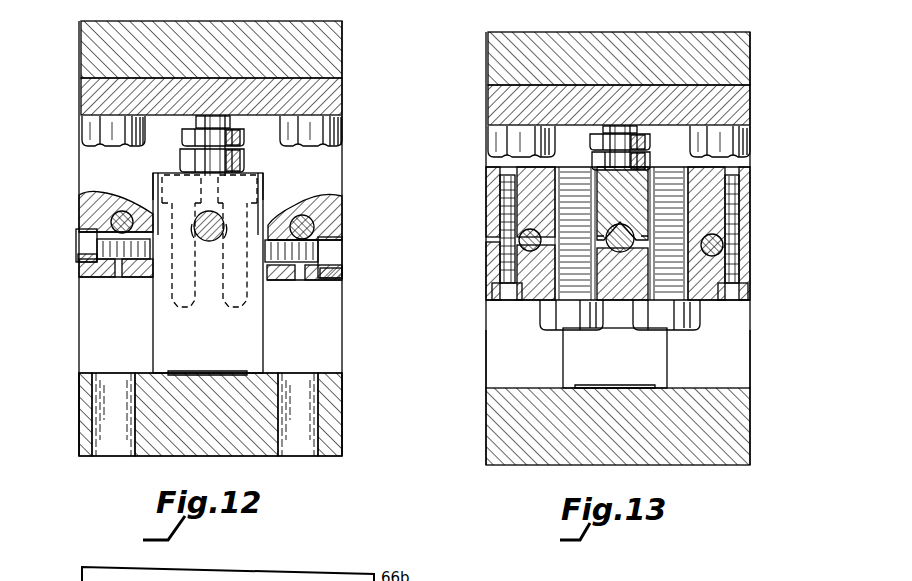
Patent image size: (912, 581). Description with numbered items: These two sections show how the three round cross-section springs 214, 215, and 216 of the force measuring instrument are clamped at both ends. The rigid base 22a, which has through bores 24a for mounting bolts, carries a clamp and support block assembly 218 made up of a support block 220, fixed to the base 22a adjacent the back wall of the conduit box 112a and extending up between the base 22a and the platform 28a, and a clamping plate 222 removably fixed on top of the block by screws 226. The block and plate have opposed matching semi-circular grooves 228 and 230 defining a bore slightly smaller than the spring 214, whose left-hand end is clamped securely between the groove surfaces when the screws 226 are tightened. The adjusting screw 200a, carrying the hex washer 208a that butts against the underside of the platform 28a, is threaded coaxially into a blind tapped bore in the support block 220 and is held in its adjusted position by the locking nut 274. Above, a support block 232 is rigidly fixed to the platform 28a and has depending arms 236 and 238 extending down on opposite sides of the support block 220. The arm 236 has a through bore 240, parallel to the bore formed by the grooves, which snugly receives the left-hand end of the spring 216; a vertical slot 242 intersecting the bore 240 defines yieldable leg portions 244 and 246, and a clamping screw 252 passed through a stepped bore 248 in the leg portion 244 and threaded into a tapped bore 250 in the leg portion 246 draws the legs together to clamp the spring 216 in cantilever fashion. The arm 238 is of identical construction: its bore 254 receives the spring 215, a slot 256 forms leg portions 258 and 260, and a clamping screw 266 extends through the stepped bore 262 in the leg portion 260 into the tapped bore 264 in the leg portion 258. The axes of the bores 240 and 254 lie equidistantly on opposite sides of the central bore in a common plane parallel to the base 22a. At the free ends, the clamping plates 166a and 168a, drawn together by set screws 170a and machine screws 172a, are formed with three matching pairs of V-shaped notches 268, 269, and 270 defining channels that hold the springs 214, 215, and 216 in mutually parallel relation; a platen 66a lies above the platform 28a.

In FIG. 12, the platen 66a is at (344, 52).
In FIG. 13, the platen 66a is at (606, 32).
In FIG. 12, the platform 28a is at (344, 102).
In FIG. 13, the platform 28a is at (490, 100).
In FIG. 12, the hex washer 208a is at (205, 128).
In FIG. 13, the hex washer 208a is at (615, 135).
In FIG. 12, the adjusting screw 200a is at (226, 128).
In FIG. 13, the adjusting screw 200a is at (630, 126).
In FIG. 12, the clamping plate 222 is at (230, 150).
In FIG. 12, the locking nut 274 is at (186, 160).
In FIG. 13, the locking nut 274 is at (642, 152).
In FIG. 12, the support block 232 is at (330, 166).
In FIG. 12, the clamp and support block assembly 218 is at (150, 341).
In FIG. 12, the support block 220 is at (263, 357).
In FIG. 13, the support block 220 is at (663, 377).
In FIG. 12, the semi-circular groove 228 is at (214, 242).
In FIG. 12, the semi-circular groove 230 is at (198, 216).
In FIG. 12, the spring 214 is at (222, 217).
In FIG. 13, the spring 214 is at (571, 288).
In FIG. 12, the screws 226 is at (153, 173).
In FIG. 12, the depending arm 236 is at (80, 204).
In FIG. 12, the through bore 240 is at (84, 216).
In FIG. 12, the spring 216 is at (125, 211).
In FIG. 13, the spring 216 is at (520, 245).
In FIG. 12, the stepped through bore 248 is at (78, 234).
In FIG. 12, the tapped through bore 250 is at (100, 248).
In FIG. 12, the clamping screw 252 is at (86, 258).
In FIG. 12, the leg portion 244 is at (82, 277).
In FIG. 12, the vertical slot 242 is at (113, 278).
In FIG. 12, the leg portion 246 is at (136, 278).
In FIG. 12, the depending arm 238 is at (330, 208).
In FIG. 12, the through bore 254 is at (316, 224).
In FIG. 12, the spring 215 is at (303, 214).
In FIG. 13, the spring 215 is at (722, 256).
In FIG. 12, the stepped bore 262 is at (332, 240).
In FIG. 12, the tapped bore 264 is at (292, 249).
In FIG. 12, the clamping screw 266 is at (334, 266).
In FIG. 12, the leg portion 260 is at (330, 283).
In FIG. 12, the vertical slot 256 is at (292, 282).
In FIG. 12, the leg portion 258 is at (276, 286).
In FIG. 12, the base 22a is at (322, 457).
In FIG. 13, the base 22a is at (744, 418).
In FIG. 12, the through bores 24a is at (116, 440).
In FIG. 13, the clamping plate 166a is at (490, 188).
In FIG. 13, the set screws 170a is at (505, 200).
In FIG. 13, the clamping plate 168a is at (494, 262).
In FIG. 13, the machine screws 172a is at (622, 233).
In FIG. 13, the V-shaped notches 270 is at (540, 238).
In FIG. 13, the V-shaped notches 269 is at (669, 233).
In FIG. 13, the V-shaped notches 268 is at (630, 248).
In FIG. 13, the conduit box 112a is at (744, 338).